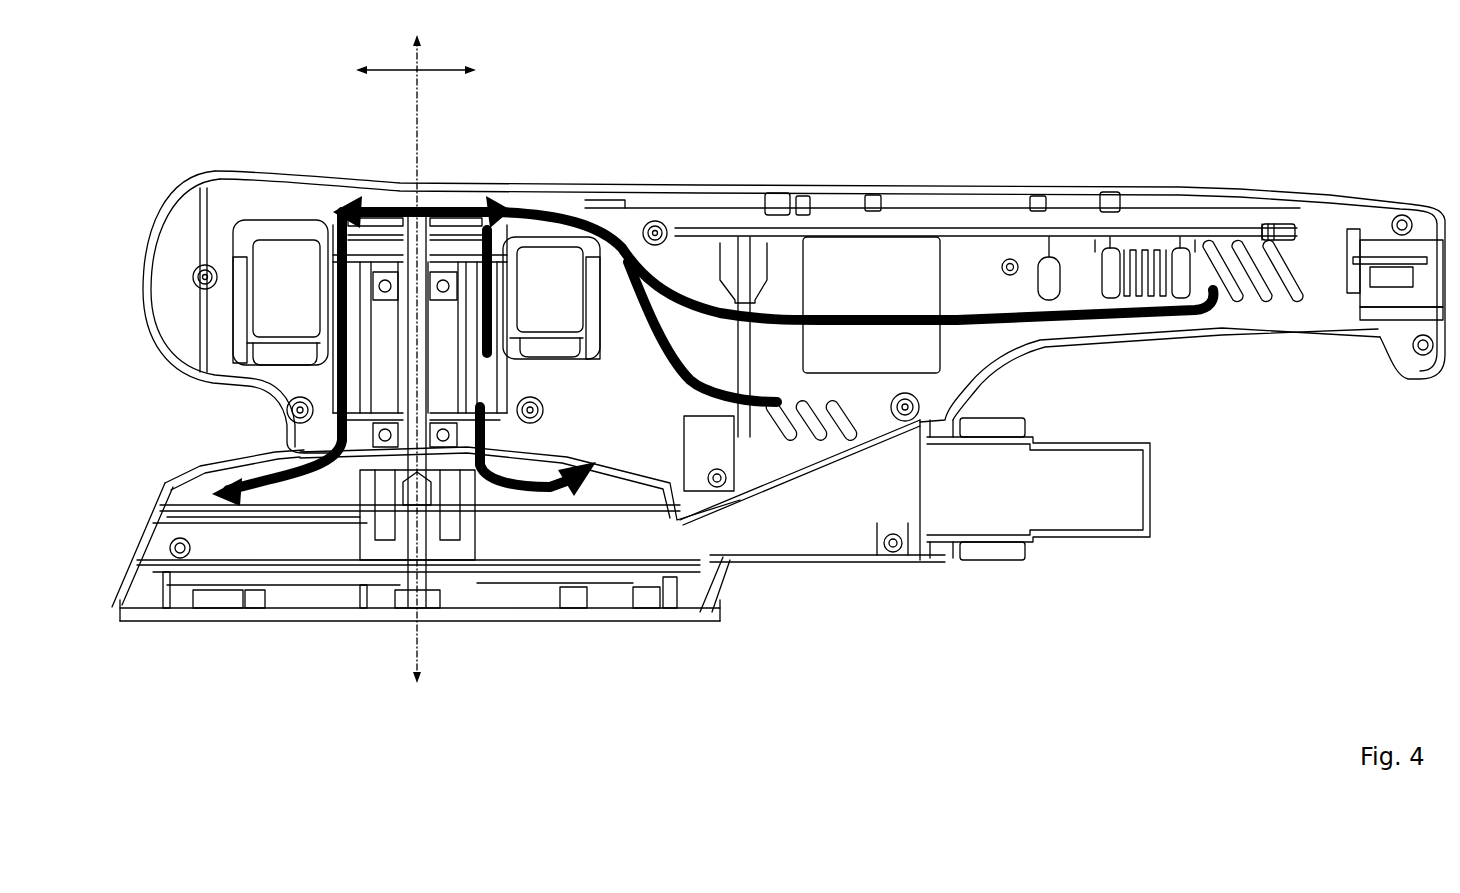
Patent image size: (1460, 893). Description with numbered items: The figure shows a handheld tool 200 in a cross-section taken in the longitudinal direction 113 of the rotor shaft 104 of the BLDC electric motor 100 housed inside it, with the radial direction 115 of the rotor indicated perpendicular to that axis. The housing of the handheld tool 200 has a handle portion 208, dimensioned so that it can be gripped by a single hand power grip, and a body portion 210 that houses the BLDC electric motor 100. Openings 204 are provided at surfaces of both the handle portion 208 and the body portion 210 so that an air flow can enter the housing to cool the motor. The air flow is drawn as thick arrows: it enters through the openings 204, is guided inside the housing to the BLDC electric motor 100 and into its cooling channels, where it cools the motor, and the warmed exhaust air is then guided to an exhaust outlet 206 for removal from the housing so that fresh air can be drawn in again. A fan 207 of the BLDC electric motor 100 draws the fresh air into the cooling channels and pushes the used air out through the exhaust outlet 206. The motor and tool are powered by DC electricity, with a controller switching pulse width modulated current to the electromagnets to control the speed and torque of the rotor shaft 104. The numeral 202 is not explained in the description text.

The BLDC electric motor 100 is at (288, 208).
The rotor shaft 104 is at (427, 338).
The longitudinal direction 113 is at (415, 64).
The radial direction 115 is at (437, 68).
The handheld tool 200 is at (657, 133).
The sanding pad 202 is at (440, 592).
The openings 204 is at (820, 445).
The exhaust outlet 206 is at (160, 497).
The fan 207 is at (220, 478).
The handle portion 208 is at (1163, 345).
The body portion 210 is at (827, 588).